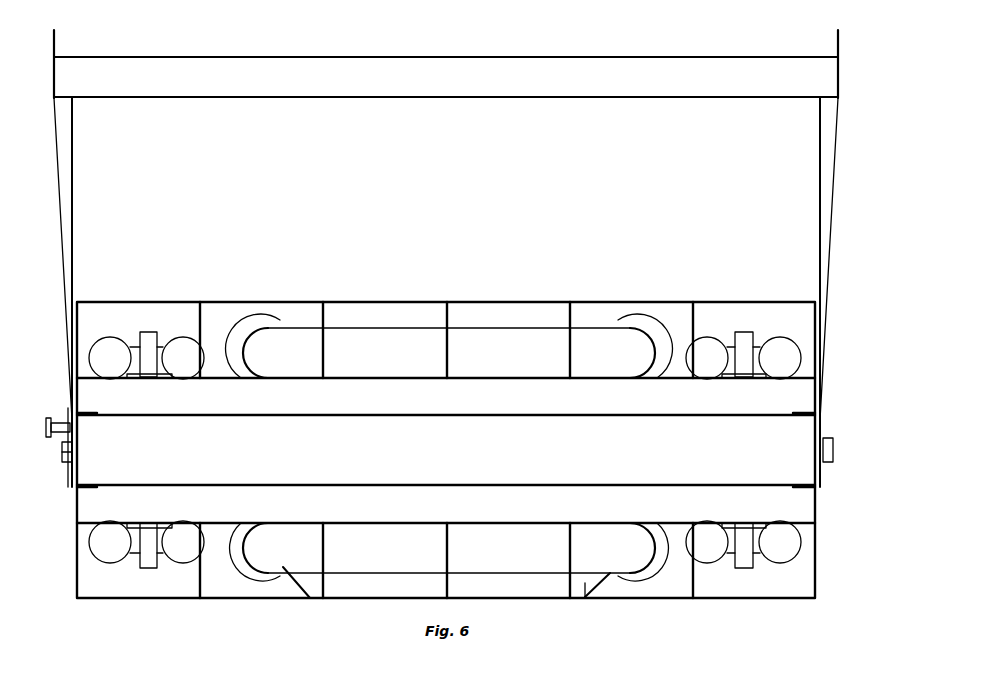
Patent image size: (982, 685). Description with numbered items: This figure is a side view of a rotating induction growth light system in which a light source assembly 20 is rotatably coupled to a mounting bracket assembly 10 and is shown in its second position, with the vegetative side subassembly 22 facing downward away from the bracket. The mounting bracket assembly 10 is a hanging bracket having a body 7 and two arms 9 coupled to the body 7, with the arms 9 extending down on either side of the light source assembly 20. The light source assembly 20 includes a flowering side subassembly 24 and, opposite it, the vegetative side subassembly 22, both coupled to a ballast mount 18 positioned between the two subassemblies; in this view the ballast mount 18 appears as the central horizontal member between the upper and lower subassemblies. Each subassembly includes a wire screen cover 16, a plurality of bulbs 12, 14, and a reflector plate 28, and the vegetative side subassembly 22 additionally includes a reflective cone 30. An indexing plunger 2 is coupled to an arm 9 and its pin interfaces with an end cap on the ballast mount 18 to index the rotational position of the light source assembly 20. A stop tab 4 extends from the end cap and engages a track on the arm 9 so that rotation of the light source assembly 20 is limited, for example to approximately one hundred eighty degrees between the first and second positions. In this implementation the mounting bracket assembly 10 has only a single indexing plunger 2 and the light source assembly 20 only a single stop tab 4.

The indexing plunger 2 is at (52, 418).
The stop tab 4 is at (62, 452).
The body 7 is at (58, 165).
The arm 9 is at (673, 78).
The mounting bracket assembly 10 is at (846, 80).
The bulb 12 is at (108, 345).
The bulb 14 is at (380, 337).
The wire screen cover 16 is at (222, 302).
The ballast mount 18 is at (805, 440).
The light source assembly 20 is at (478, 292).
The vegetative side subassembly 22 is at (673, 556).
The flowering side subassembly 24 is at (748, 315).
The reflector plate 28 is at (812, 388).
The reflective cone 30 is at (585, 597).